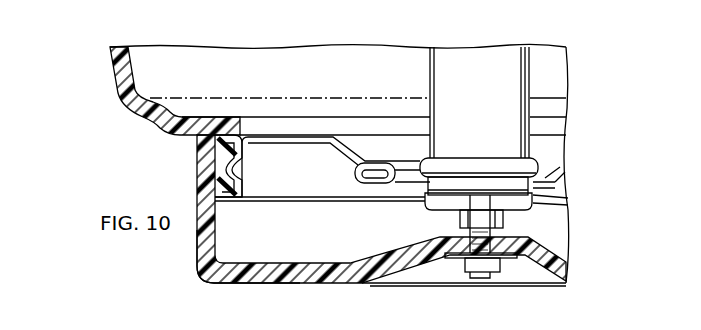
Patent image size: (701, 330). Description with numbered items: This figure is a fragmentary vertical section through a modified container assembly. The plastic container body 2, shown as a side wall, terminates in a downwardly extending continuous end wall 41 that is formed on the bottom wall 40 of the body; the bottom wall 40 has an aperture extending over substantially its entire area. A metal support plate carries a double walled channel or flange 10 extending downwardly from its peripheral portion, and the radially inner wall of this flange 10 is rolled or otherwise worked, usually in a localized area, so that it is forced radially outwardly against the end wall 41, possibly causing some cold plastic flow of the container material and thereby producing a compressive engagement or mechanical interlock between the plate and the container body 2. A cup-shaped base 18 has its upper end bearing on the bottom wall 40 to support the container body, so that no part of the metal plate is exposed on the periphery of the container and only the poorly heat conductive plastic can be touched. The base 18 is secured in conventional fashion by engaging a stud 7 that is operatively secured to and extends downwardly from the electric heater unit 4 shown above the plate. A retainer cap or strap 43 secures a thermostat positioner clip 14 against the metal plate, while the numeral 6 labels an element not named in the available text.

The container body 2 is at (116, 71).
The bottom wall 40 is at (197, 117).
The double walled channel or flange 10 is at (207, 157).
The cup-shaped base 18 is at (213, 240).
The continuous end wall 41 is at (233, 180).
The mounting bracket 6 is at (299, 137).
The thermostat positioner clip 14 is at (380, 185).
The electric heater unit 4 is at (528, 61).
The retainer cap or strap 43 is at (533, 200).
The stud 7 is at (495, 272).